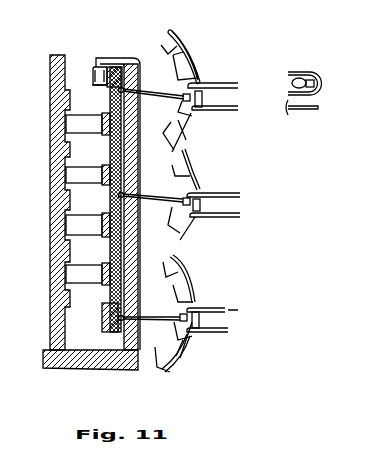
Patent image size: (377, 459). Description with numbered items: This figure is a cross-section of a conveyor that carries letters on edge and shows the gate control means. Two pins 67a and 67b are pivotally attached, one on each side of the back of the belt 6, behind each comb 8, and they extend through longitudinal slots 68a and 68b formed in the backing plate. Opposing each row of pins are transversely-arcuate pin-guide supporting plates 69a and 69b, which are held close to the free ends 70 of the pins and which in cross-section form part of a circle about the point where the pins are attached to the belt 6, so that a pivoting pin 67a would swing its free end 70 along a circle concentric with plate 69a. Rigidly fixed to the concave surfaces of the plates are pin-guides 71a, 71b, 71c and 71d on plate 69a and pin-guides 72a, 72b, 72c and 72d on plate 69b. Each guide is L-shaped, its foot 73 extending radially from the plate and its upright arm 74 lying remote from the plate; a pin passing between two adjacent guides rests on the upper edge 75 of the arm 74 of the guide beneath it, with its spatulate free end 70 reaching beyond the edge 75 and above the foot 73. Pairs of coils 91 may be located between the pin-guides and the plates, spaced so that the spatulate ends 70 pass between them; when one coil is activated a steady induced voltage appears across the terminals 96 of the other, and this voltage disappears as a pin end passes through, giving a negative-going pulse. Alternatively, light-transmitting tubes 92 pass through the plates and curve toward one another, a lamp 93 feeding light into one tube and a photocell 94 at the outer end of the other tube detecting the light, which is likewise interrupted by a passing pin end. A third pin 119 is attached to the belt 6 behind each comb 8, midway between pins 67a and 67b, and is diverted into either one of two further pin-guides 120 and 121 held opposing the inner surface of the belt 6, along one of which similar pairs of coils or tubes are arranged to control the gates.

The comb 8 is at (62, 222).
The belt 6 is at (111, 249).
The pin-guide 71d is at (175, 29).
The pin-guide supporting plate 69a is at (186, 38).
The upright arm 74 is at (162, 48).
The foot 73 is at (190, 53).
The upper edge 75 is at (179, 205).
The pin-guide 71c is at (198, 75).
The light-transmitting tube 92 is at (237, 83).
The pin 67a is at (150, 88).
The longitudinal slot 68a is at (139, 100).
The free end 70 is at (200, 112).
The pin-guide 71b is at (193, 127).
The pin-guide 71a is at (190, 142).
The pin-guide 120 is at (200, 178).
The third pin 119 is at (155, 201).
The pin-guide 121 is at (196, 226).
The pin-guide 72d is at (180, 260).
The pin-guide 72c is at (195, 286).
The coil 91 is at (208, 308).
The terminals 96 is at (238, 310).
The longitudinal slot 68b is at (131, 298).
The pin 67b is at (148, 321).
The pin-guide 72b is at (187, 345).
The pin-guide supporting plate 69b is at (185, 360).
The pin-guide 72a is at (175, 373).
The lamp 93 is at (321, 80).
The photocell 94 is at (310, 109).